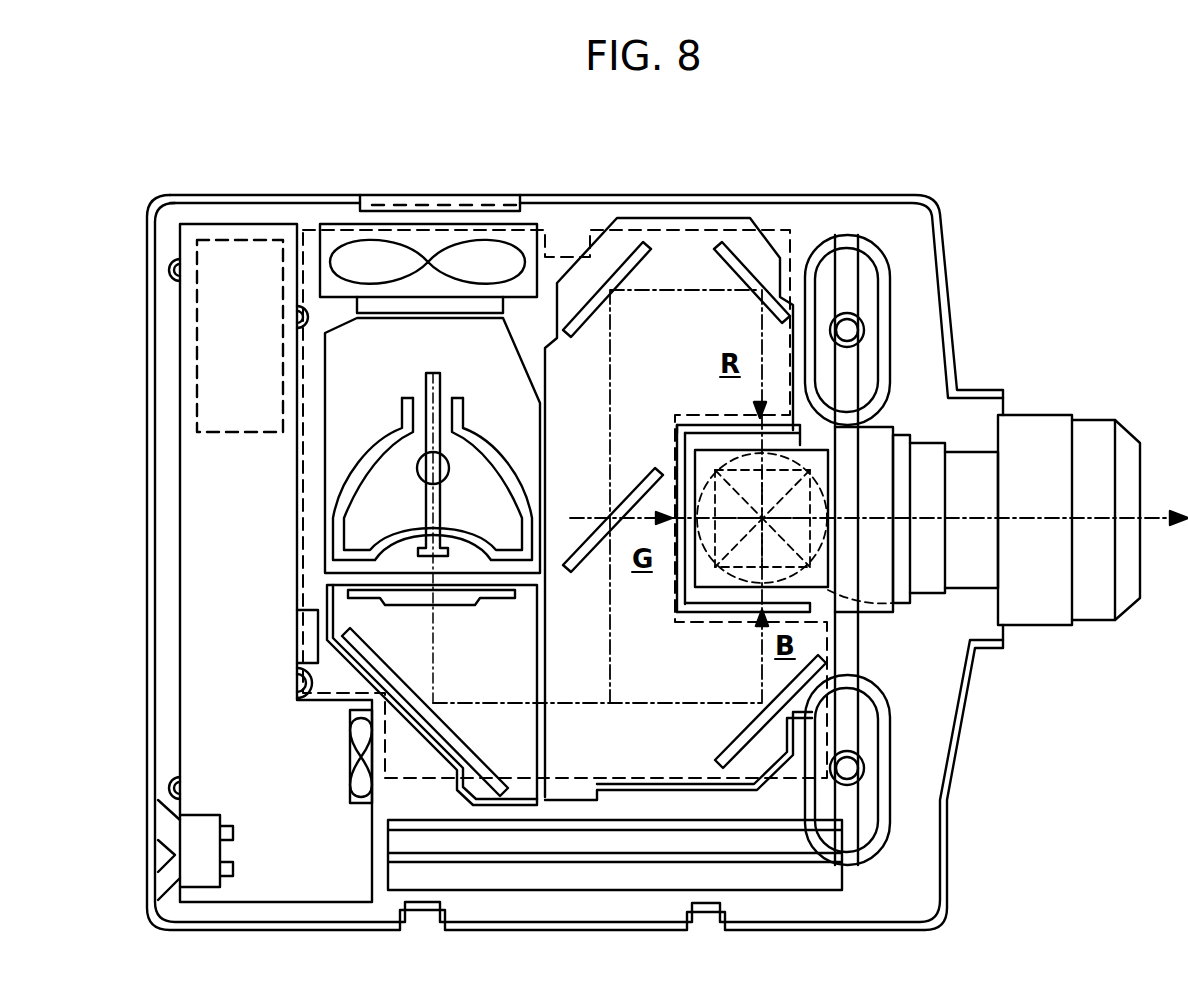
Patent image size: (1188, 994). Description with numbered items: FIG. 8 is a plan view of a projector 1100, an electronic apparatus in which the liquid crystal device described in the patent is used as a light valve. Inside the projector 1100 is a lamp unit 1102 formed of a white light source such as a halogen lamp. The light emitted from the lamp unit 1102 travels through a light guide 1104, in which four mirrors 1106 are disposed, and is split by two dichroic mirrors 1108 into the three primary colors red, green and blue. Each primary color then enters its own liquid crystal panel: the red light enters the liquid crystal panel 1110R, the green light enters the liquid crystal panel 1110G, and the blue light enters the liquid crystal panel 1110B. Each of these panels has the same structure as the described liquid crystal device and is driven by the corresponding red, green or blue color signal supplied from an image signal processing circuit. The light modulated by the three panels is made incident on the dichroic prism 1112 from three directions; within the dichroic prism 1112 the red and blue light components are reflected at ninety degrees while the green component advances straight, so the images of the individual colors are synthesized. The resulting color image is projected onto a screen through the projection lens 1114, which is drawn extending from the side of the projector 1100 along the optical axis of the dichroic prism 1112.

The projector 1100 is at (966, 194).
The lamp unit 1102 is at (485, 353).
The light guide 1104 is at (622, 212).
The mirror 1106 is at (625, 268).
The dichroic mirror 1108 is at (612, 536).
The liquid crystal panel 1110R is at (727, 430).
The liquid crystal panel 1110G is at (687, 488).
The liquid crystal panel 1110B is at (717, 607).
The dichroic prism 1112 is at (897, 612).
The projection lens 1114 is at (1107, 430).